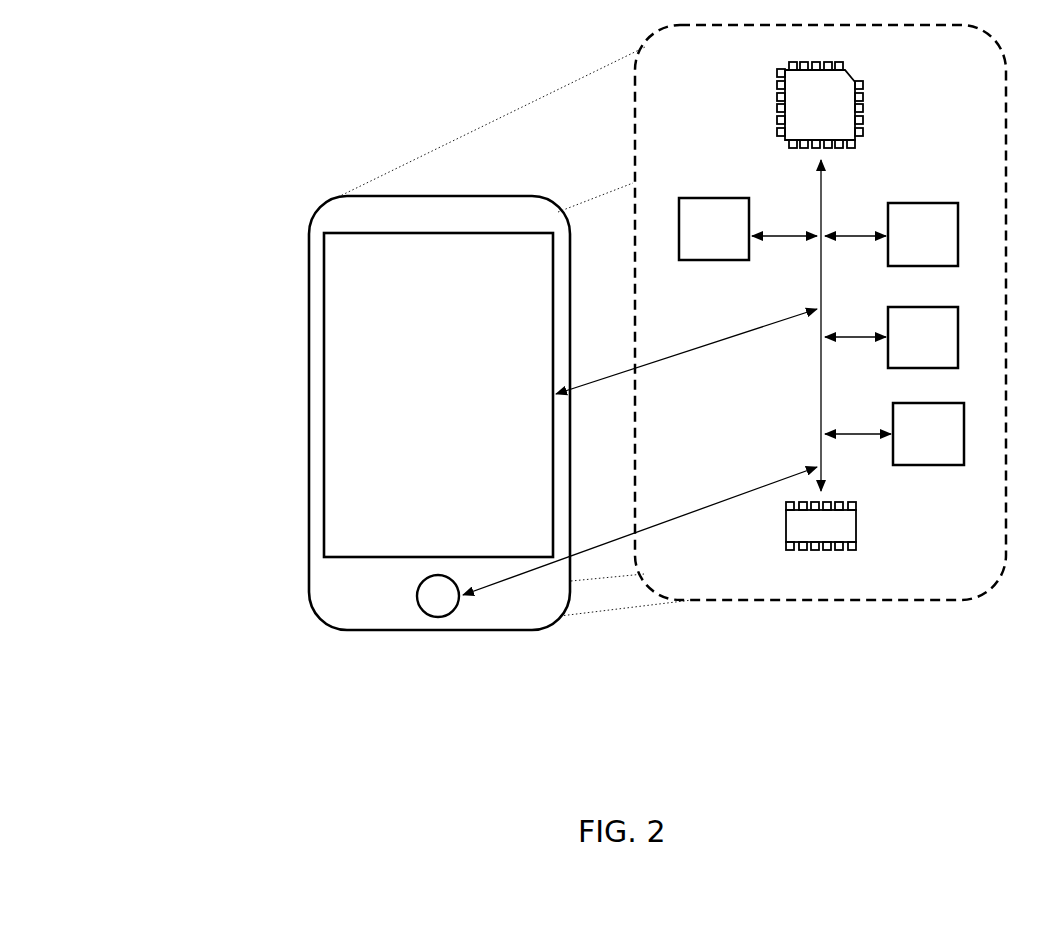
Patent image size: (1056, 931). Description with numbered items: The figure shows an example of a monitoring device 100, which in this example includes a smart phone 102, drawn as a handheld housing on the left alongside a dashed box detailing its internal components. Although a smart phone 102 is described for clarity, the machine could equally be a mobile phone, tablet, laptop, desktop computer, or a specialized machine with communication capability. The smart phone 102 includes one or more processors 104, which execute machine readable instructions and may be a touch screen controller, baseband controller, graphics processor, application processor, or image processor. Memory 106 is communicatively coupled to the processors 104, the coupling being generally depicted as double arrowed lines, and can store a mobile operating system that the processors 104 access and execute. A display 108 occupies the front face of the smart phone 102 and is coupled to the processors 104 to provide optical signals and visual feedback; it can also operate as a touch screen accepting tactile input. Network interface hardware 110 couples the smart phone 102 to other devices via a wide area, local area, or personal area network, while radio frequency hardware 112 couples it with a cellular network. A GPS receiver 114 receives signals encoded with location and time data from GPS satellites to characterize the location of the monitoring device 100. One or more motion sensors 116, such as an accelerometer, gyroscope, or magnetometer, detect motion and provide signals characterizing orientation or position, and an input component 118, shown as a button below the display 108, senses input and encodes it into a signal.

The monitoring device 100 is at (217, 90).
The smart phone 102 is at (309, 258).
The processors 104 is at (847, 72).
The memory 106 is at (857, 527).
The display 108 is at (438, 395).
The network interface hardware 110 is at (953, 203).
The radio frequency (RF) hardware 112 is at (953, 307).
The GPS receiver 114 is at (958, 403).
The motion sensors 116 is at (687, 198).
The input component 118 is at (418, 597).